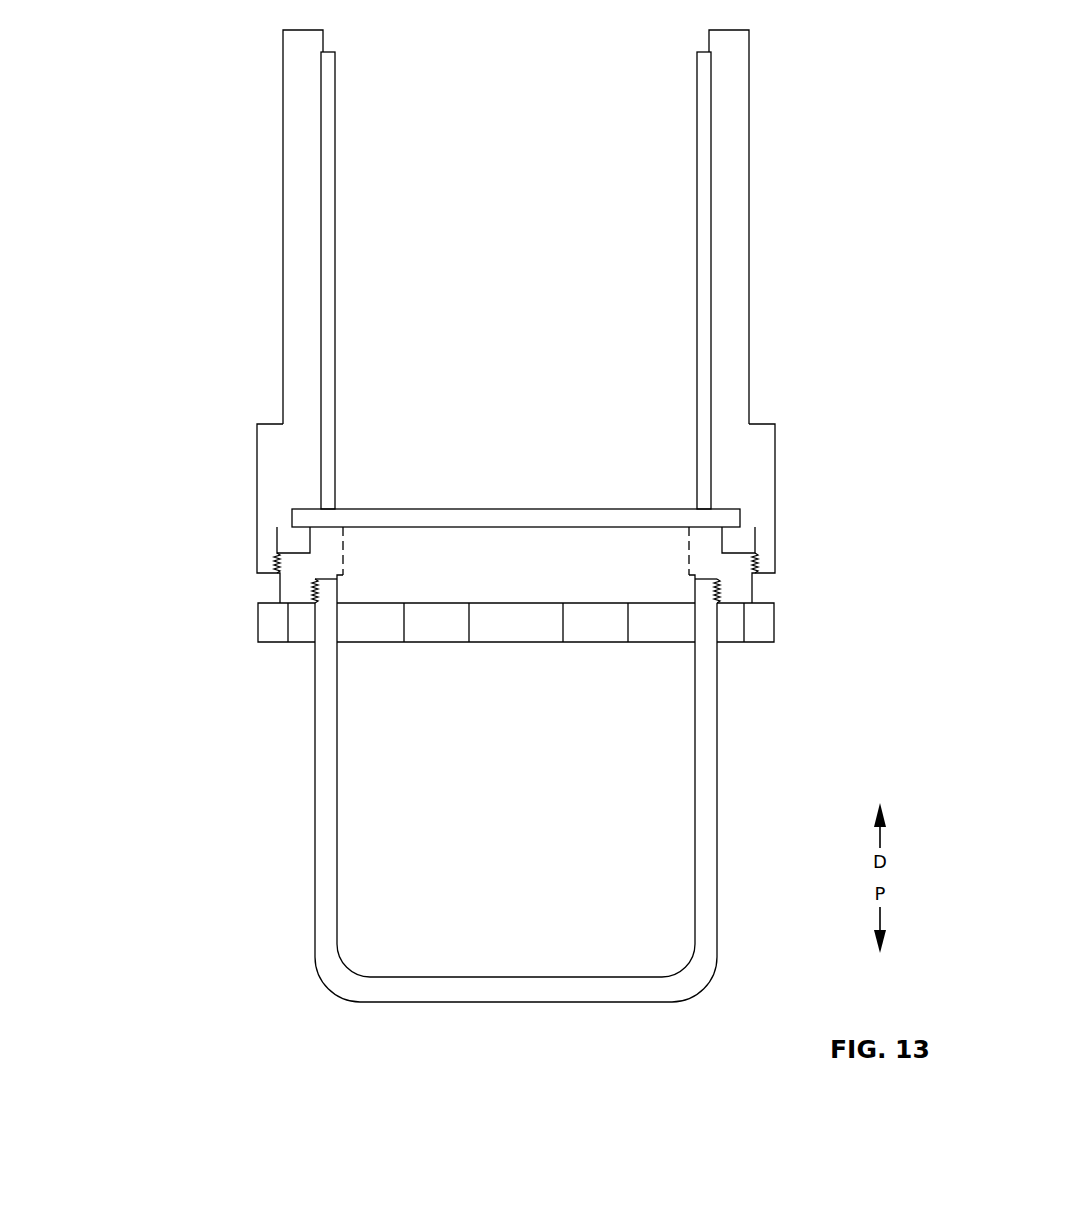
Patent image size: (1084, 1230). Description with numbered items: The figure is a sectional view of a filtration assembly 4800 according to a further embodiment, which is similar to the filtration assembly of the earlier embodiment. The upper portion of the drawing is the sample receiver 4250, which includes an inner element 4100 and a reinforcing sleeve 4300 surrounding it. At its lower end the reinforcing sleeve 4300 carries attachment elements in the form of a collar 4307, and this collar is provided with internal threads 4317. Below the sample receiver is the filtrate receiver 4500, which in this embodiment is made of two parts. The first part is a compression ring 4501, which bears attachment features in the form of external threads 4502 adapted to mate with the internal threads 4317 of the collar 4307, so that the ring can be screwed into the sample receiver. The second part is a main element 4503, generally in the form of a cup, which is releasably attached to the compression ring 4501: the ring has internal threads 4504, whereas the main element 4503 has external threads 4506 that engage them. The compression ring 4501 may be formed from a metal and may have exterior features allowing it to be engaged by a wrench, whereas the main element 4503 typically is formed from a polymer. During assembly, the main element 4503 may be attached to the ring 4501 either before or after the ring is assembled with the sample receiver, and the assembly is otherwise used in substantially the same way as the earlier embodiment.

The inner element 4100 is at (335, 133).
The reinforcing sleeve 4300 is at (292, 180).
The sample receiver 4250 is at (257, 246).
The filtration assembly 4800 is at (175, 295).
The collar 4307 is at (273, 445).
The internal threads 4317 is at (272, 557).
The external threads 4502 is at (288, 563).
The compression ring 4501 is at (254, 628).
The internal threads 4504 is at (313, 590).
The external threads 4506 is at (326, 591).
The filtrate receiver 4500 is at (205, 838).
The main element 4503 is at (315, 932).